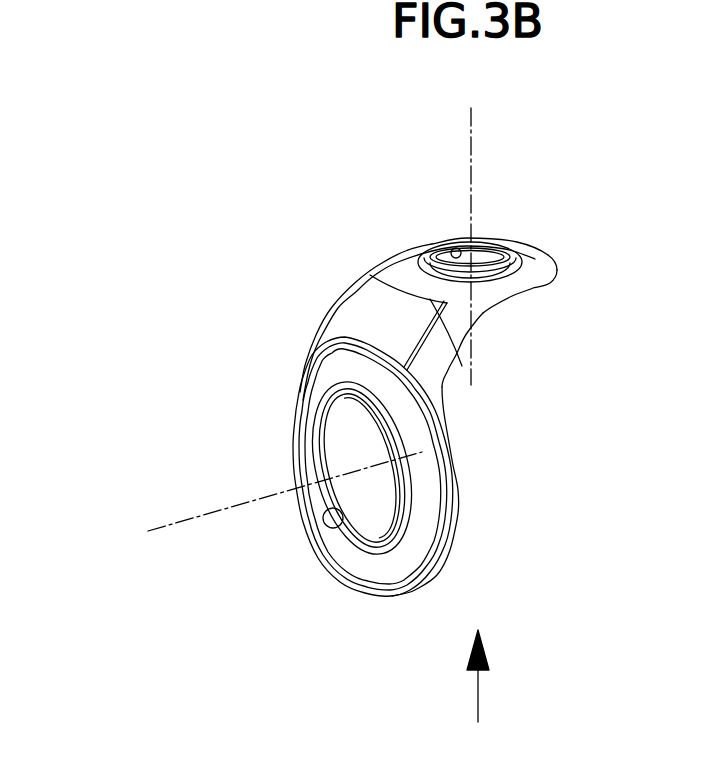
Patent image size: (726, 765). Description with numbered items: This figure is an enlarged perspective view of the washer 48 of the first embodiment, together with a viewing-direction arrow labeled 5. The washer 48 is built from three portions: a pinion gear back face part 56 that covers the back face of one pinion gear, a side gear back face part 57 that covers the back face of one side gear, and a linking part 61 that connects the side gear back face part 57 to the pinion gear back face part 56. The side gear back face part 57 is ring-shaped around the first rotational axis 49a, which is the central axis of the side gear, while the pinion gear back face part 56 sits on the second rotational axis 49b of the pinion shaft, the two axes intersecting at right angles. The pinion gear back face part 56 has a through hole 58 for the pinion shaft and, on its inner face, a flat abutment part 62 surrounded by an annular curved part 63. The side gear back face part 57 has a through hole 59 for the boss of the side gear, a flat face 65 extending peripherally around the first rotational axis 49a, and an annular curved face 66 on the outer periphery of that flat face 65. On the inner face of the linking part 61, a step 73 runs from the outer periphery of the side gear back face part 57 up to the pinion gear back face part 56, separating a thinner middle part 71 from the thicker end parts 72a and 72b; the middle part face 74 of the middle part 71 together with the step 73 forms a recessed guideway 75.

The washer 48 is at (530, 197).
The first rotational axis 49a is at (170, 527).
The second rotational axis 49b is at (466, 130).
The pinion gear back face part 56 is at (547, 259).
The side gear back face part 57 is at (290, 430).
The through hole 58 is at (445, 254).
The through hole 59 is at (338, 527).
The linking part 61 is at (327, 318).
The abutment part 62 is at (492, 282).
The curved part 63 is at (538, 280).
The flat face 65 is at (413, 520).
The curved face 66 is at (430, 479).
The middle part 71 is at (390, 300).
The end part 72a is at (356, 286).
The end part 72b is at (443, 378).
The step 73 is at (462, 366).
The middle part face 74 is at (446, 332).
The guideway 75 is at (408, 342).
The viewing direction arrow of FIG. 5 is at (480, 697).